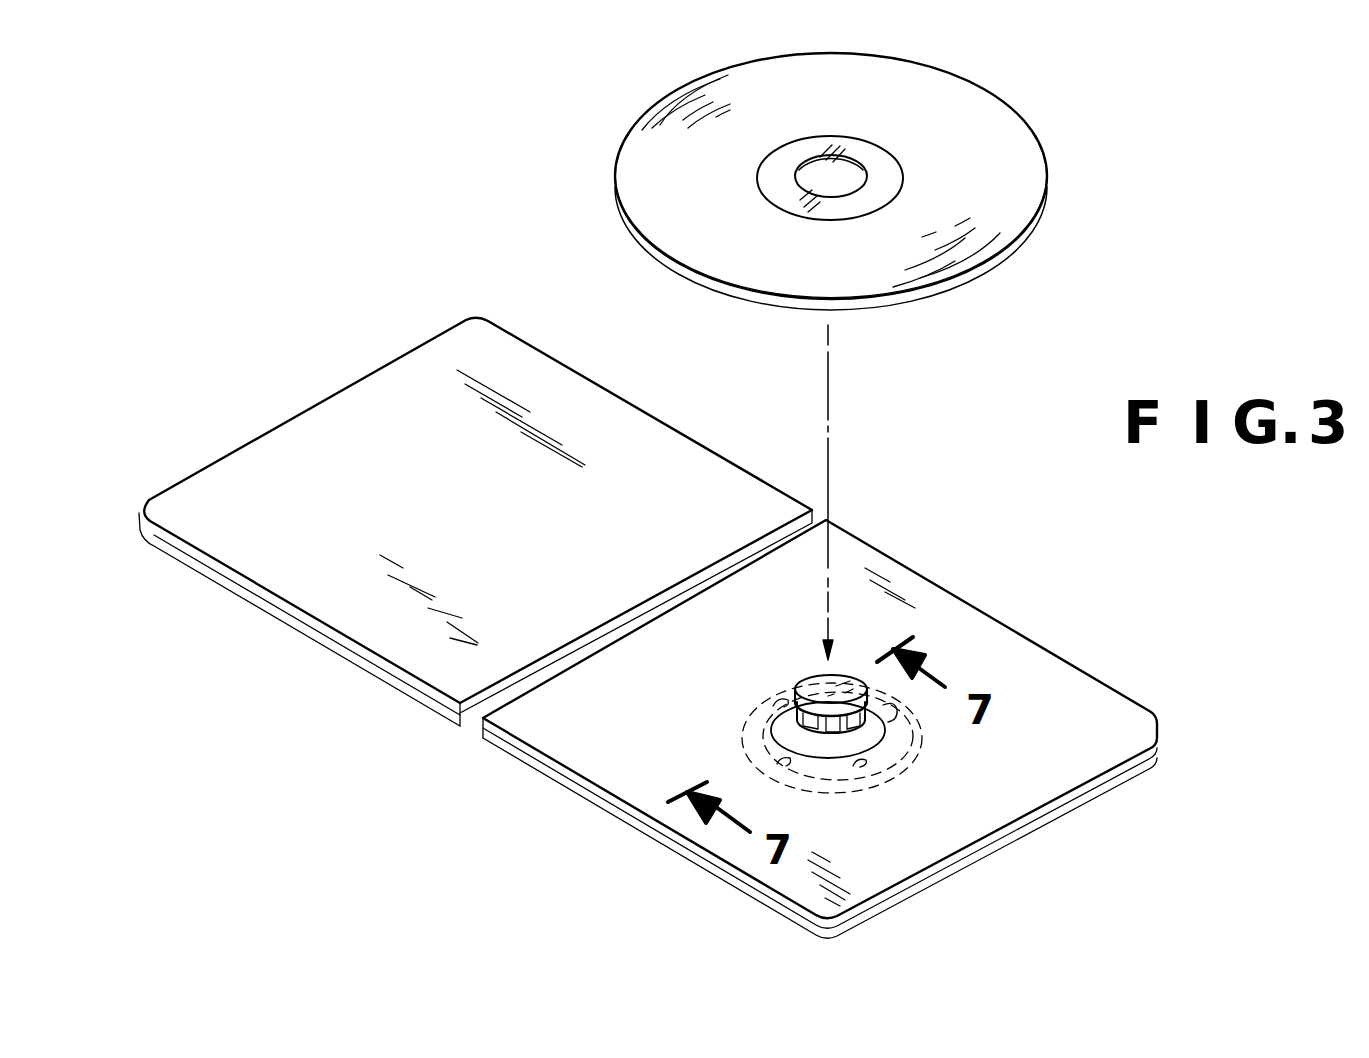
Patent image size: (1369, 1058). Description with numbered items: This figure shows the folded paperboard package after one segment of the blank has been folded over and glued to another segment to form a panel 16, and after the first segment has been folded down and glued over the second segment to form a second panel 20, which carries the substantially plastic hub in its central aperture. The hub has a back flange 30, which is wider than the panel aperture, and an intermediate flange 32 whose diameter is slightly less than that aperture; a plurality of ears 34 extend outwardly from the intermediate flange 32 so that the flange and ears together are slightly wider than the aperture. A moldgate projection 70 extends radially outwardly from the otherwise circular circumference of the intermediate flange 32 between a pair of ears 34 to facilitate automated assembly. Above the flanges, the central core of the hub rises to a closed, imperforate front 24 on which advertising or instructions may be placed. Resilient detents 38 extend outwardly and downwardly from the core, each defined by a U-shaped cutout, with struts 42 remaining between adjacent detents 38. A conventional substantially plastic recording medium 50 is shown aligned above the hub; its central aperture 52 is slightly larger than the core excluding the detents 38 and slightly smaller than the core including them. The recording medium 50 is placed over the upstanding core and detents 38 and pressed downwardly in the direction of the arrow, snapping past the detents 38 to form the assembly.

The panel 16 is at (284, 448).
The second panel 20 is at (1092, 720).
The front 24 is at (823, 692).
The back flange 30 is at (750, 739).
The intermediate flange 32 is at (771, 722).
The ears 34 is at (778, 765).
The resilient detents 38 is at (858, 716).
The struts 42 is at (832, 732).
The recording medium 50 is at (653, 208).
The central aperture 52 is at (838, 177).
The moldgate projection 70 is at (930, 738).